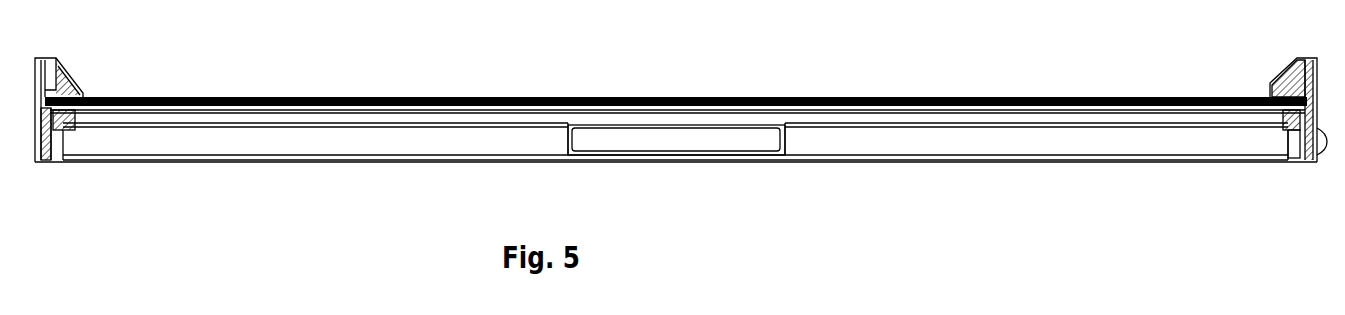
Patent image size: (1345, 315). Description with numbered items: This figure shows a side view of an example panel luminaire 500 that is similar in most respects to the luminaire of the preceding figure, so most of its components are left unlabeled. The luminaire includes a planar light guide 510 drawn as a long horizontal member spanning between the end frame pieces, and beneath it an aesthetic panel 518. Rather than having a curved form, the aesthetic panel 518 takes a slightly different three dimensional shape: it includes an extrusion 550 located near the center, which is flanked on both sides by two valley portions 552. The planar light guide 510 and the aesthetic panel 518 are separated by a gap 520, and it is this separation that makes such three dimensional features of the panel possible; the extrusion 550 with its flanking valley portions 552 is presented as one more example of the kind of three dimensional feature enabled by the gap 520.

The panel luminaire 500 is at (1038, 218).
The planar light guide 510 is at (443, 105).
The aesthetic panel 518 is at (242, 123).
The gap 520 is at (997, 117).
The extrusion 550 is at (713, 150).
The valley portions 552 is at (352, 125).